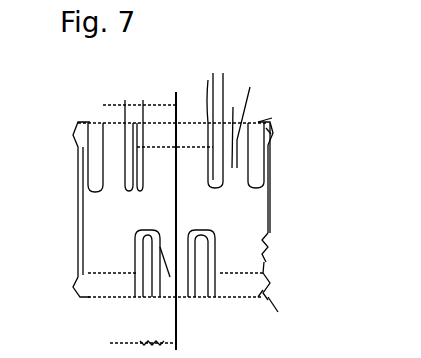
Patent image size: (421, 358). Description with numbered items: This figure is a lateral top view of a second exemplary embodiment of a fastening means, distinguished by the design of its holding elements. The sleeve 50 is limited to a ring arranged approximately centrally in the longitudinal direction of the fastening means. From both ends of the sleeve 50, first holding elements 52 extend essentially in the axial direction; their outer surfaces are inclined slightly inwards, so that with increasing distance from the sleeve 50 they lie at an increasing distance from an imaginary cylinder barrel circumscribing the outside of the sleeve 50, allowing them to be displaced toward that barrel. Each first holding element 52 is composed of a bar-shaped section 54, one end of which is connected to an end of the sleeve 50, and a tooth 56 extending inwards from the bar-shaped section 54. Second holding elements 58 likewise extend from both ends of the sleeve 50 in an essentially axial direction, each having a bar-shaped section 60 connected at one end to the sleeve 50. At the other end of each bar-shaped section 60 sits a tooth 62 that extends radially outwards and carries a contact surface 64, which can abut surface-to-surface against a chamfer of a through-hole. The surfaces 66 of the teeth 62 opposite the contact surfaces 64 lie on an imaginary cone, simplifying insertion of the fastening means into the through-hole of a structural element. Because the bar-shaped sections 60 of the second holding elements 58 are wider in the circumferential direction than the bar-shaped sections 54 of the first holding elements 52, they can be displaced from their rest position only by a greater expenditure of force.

The sleeve 50 is at (238, 212).
The first holding element 52 is at (108, 112).
The bar-shaped section 54 is at (127, 123).
The tooth 56 is at (137, 123).
The second holding element 58 is at (150, 185).
The bar-shaped section 60 is at (270, 172).
The tooth 62 is at (270, 120).
The contact surface 64 is at (272, 143).
The surface 66 is at (272, 118).